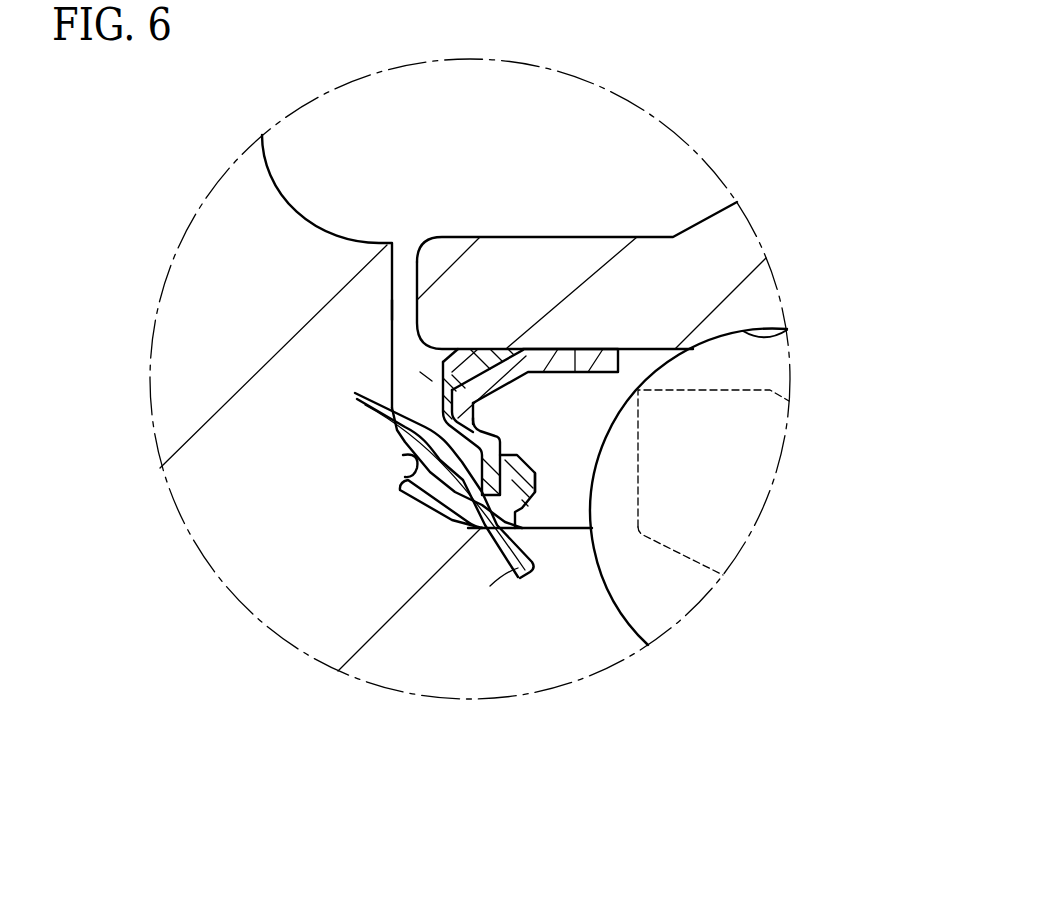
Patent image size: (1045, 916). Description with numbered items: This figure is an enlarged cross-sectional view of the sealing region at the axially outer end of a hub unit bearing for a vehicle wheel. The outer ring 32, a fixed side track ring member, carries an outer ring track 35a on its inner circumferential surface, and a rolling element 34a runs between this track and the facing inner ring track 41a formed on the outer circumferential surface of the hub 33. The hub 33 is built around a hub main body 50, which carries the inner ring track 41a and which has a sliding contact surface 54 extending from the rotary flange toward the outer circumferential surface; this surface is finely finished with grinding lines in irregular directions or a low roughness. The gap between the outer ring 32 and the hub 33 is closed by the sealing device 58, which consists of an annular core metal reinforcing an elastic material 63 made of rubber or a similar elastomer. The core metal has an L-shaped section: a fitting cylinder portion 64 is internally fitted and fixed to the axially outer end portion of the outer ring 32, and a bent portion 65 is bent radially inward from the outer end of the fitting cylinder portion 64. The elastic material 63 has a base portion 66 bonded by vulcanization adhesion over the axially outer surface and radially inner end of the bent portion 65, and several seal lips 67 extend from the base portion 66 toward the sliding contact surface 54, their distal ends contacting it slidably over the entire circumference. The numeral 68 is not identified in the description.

The outer ring 32 is at (735, 250).
The hub 33 is at (167, 226).
The rolling element 34a is at (773, 366).
The outer ring track 35a is at (788, 328).
The inner ring track 41a is at (630, 615).
The hub main body 50 is at (212, 275).
The sliding contact surface 54 is at (417, 477).
The sealing device 58 is at (432, 381).
The elastic material 63 is at (468, 363).
The fitting cylinder portion 64 is at (553, 357).
The bent portion 65 is at (468, 420).
The base portion 66 is at (540, 480).
The seal lip 67 is at (358, 400).
The fitting portion 68 is at (582, 357).